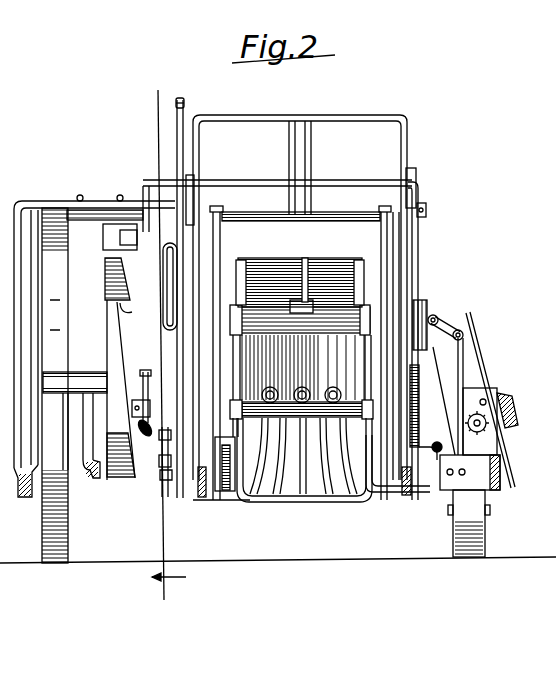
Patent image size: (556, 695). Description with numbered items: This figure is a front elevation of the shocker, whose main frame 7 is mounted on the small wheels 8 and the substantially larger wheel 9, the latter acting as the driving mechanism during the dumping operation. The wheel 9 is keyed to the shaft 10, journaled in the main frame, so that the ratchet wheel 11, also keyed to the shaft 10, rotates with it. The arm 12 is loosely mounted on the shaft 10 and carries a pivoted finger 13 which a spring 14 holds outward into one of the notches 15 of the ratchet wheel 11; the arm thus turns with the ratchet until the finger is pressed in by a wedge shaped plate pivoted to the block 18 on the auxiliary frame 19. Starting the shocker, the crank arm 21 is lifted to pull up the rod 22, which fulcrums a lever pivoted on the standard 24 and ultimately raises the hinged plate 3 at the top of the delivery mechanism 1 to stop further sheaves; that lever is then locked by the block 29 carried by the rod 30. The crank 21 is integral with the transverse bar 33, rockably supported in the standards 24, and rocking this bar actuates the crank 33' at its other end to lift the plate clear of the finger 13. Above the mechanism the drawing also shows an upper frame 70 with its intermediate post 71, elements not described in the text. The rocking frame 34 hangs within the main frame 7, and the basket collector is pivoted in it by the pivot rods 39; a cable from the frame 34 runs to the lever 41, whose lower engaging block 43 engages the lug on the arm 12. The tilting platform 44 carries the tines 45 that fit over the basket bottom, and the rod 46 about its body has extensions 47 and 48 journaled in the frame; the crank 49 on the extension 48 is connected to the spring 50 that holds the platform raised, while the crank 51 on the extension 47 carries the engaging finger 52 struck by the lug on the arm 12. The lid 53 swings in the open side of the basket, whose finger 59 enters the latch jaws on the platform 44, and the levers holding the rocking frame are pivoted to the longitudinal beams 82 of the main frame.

The delivery mechanism 1 is at (470, 390).
The hingedly mounted plate 3 is at (164, 345).
The main frame 7 is at (483, 470).
The wheels 8 is at (486, 541).
The wheel 9 is at (45, 513).
The shaft 10 is at (73, 375).
The ratchet wheel 11 is at (109, 318).
The arm 12 is at (145, 372).
The pivoted finger 13 is at (150, 423).
The spring 14 is at (148, 437).
The notches 15 is at (127, 312).
The block 18 is at (120, 225).
The auxiliary frame 19 is at (75, 222).
The crank arm 21 is at (427, 206).
The rod 22 is at (420, 249).
The standard 24 is at (410, 178).
The block 29 is at (463, 322).
The rod 30 is at (342, 367).
The bar 33 is at (277, 170).
The crank 33' is at (131, 194).
The rocking frame 34 is at (221, 492).
The pivot rods 39 is at (385, 380).
The lever 41 is at (185, 109).
The engaging block 43 is at (163, 482).
The tilting platform 44 is at (400, 325).
The tines 45 is at (338, 500).
The rod 46 is at (263, 305).
The extension 47 is at (232, 492).
The extension 48 is at (385, 498).
The crank 49 is at (437, 442).
The spring 50 is at (498, 402).
The crank 51 is at (173, 475).
The engaging finger 52 is at (163, 285).
The lid 53 is at (338, 262).
The finger 59 is at (306, 262).
The frame 70 is at (373, 118).
The frame post 71 is at (300, 135).
The longitudinal beams 82 is at (200, 498).